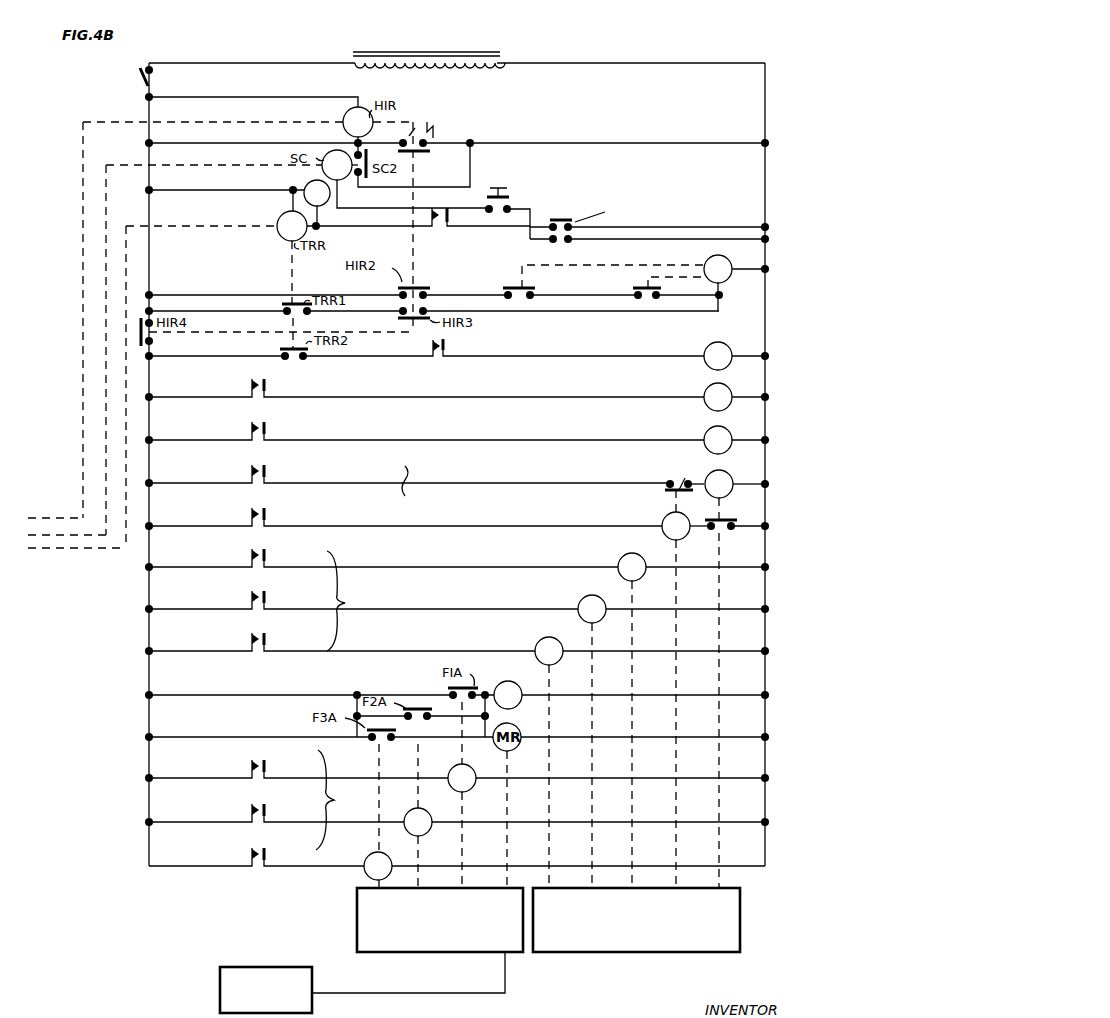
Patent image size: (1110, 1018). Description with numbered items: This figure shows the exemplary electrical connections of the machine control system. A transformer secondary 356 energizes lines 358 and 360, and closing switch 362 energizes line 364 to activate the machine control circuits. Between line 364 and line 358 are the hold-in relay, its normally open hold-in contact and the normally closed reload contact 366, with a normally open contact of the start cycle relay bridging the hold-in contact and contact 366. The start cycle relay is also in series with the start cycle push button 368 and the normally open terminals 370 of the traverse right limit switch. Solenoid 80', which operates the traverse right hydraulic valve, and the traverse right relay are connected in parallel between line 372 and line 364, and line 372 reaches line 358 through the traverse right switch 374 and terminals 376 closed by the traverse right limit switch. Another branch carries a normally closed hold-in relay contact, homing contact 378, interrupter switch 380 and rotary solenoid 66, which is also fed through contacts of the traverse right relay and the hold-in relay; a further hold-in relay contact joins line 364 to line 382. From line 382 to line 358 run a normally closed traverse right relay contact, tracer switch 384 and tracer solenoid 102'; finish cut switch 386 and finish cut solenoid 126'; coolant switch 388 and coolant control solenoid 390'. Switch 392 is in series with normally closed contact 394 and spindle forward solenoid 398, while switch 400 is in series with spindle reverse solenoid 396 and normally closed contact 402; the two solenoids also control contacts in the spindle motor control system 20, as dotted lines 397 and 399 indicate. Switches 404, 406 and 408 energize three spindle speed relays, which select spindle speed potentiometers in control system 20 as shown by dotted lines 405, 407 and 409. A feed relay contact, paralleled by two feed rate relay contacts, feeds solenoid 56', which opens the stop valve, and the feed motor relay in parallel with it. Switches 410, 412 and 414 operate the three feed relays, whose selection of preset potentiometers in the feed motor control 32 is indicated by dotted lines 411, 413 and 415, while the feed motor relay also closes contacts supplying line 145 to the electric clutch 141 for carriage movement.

The transformer secondary 356 is at (500, 60).
The line 358 is at (765, 108).
The line 360 is at (287, 63).
The switch 362 is at (152, 80).
The line 364 is at (144, 108).
The reload contact 366 is at (440, 131).
The start cycle push button 368 is at (502, 187).
The terminals 370 is at (647, 250).
The line 372 is at (420, 240).
The traverse right switch 374 is at (450, 222).
The terminals 376 is at (562, 218).
The homing contact 378 is at (515, 286).
The interrupter switch 380 is at (640, 284).
The line 382 is at (149, 364).
The switch 384 is at (447, 346).
The Fin. Cut column switch 386 is at (268, 388).
The Coolant column switch 388 is at (268, 430).
The coolant control solenoid 390' is at (716, 434).
The switch 392 is at (268, 474).
The contact 394 is at (676, 478).
The spindle reverse solenoid 396 is at (666, 516).
The dotted line 397 is at (724, 636).
The spindle forward solenoid 398 is at (726, 474).
The dotted line 399 is at (676, 642).
The switch 400 is at (266, 516).
The contact 402 is at (736, 511).
The switch 404 is at (268, 557).
The dotted line 405 is at (632, 665).
The spindle speed switch 406 is at (268, 600).
The dotted line 407 is at (592, 665).
The spindle speed switch 408 is at (268, 640).
The dotted line 409 is at (549, 730).
The switch 410 is at (268, 768).
The dotted line 411 is at (462, 848).
The switch 412 is at (268, 813).
The dotted line 413 is at (418, 848).
The switch 414 is at (268, 857).
The dotted line 415 is at (379, 846).
The solenoid 56' is at (629, 685).
The rotary solenoid 66 is at (730, 265).
The solenoid 80' is at (239, 202).
The solenoid 102' is at (734, 345).
The finish cut solenoid 126' is at (716, 390).
The feed motor control 32 is at (357, 922).
The spindle motor control system 20 is at (740, 944).
The electric clutch 141 is at (276, 966).
The line 145 is at (418, 993).